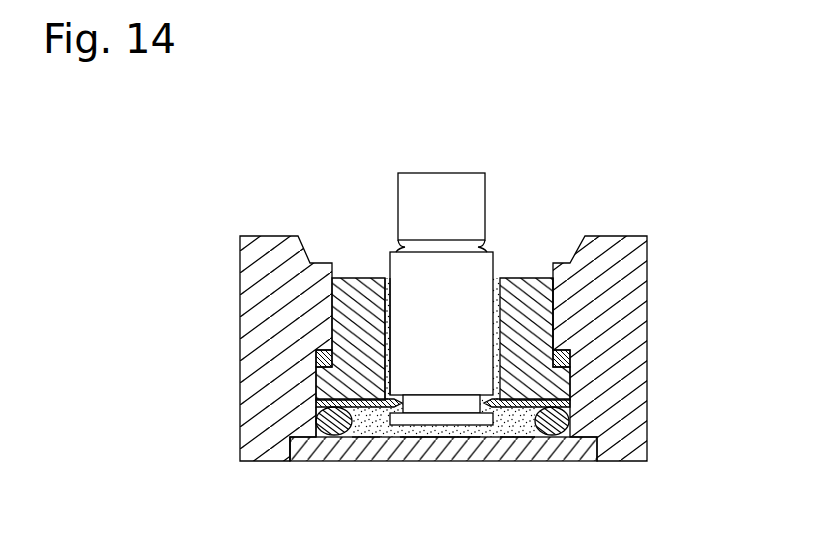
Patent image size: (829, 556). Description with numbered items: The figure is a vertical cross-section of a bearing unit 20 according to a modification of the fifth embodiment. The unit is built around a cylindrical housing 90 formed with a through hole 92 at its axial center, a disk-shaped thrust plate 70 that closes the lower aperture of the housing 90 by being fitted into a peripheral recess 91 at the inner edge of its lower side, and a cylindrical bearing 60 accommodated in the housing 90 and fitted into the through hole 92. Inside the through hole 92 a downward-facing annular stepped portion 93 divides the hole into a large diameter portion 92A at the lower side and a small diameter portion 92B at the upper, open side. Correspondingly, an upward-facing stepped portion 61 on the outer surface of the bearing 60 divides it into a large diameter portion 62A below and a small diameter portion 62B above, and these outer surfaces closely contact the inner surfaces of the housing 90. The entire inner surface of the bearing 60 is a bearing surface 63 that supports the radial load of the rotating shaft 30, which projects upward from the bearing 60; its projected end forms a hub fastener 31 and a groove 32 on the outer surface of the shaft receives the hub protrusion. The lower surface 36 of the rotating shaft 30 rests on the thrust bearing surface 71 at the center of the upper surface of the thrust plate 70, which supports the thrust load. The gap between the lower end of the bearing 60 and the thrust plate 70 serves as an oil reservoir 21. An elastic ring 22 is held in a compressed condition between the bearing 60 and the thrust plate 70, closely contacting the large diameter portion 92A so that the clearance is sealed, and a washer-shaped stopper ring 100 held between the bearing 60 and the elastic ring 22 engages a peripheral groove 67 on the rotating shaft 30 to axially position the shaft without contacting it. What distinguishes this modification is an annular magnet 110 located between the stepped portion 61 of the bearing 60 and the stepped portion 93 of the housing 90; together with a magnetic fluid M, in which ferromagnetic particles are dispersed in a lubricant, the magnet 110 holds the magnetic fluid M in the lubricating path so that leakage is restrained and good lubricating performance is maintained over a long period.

The bearing unit 20 is at (232, 309).
The oil reservoir 21 is at (357, 432).
The elastic ring 22 is at (316, 420).
The rotating shaft 30 is at (462, 173).
The hub fastener 31 is at (397, 196).
The groove 32 is at (481, 247).
The lower surface 36 is at (438, 440).
The bearing 60 is at (521, 279).
The stepped portion 61 is at (316, 356).
The large diameter portion 62A is at (572, 392).
The small diameter portion 62B is at (560, 340).
The bearing surface 63 is at (390, 297).
The peripheral groove 67 is at (455, 397).
The thrust plate 70 is at (470, 463).
The thrust bearing surface 71 is at (425, 422).
The housing 90 is at (647, 270).
The peripheral recess 91 is at (298, 440).
The through hole 92 is at (346, 300).
The large diameter portion 92A is at (553, 405).
The small diameter portion 92B is at (538, 305).
The stepped portion 93 is at (332, 352).
The stopper ring 100 is at (518, 408).
The magnet 110 is at (572, 358).
The magnetic fluid M is at (373, 420).